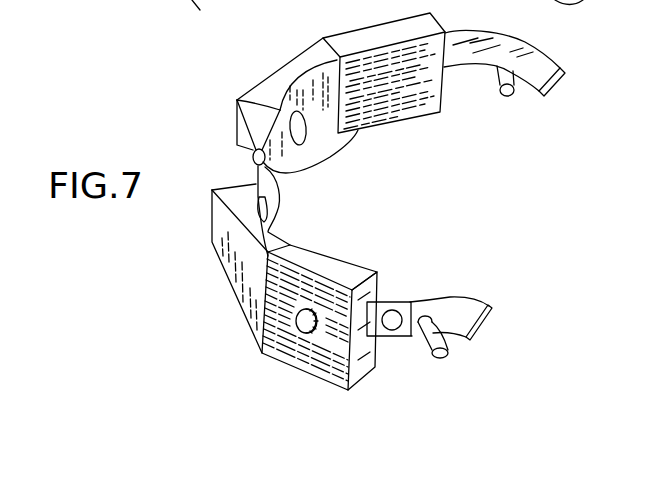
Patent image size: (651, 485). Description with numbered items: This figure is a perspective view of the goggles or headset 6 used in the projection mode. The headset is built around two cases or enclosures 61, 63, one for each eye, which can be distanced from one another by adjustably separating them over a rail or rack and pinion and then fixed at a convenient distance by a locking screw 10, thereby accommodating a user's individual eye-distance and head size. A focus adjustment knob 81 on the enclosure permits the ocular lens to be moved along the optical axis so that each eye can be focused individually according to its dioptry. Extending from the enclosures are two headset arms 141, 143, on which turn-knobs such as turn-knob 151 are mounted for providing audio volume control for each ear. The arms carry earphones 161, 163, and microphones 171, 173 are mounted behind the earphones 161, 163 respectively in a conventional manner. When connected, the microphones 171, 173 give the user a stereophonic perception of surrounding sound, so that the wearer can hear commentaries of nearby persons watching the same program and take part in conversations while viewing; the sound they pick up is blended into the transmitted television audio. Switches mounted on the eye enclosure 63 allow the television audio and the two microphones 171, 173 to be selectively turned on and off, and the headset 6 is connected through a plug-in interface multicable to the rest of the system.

The eye enclosure 63 is at (281, 70).
The locking screw 10 is at (252, 158).
The headset or goggles 6 is at (375, 133).
The headset arm 143 is at (548, 57).
The microphone 173 is at (560, 75).
The earphone 163 is at (506, 98).
The eye enclosure 61 is at (233, 302).
The focus adjustment knob 81 is at (318, 308).
The turn-knob 151 is at (395, 302).
The headset arm 141 is at (460, 312).
The microphone 171 is at (492, 317).
The earphone 161 is at (442, 357).